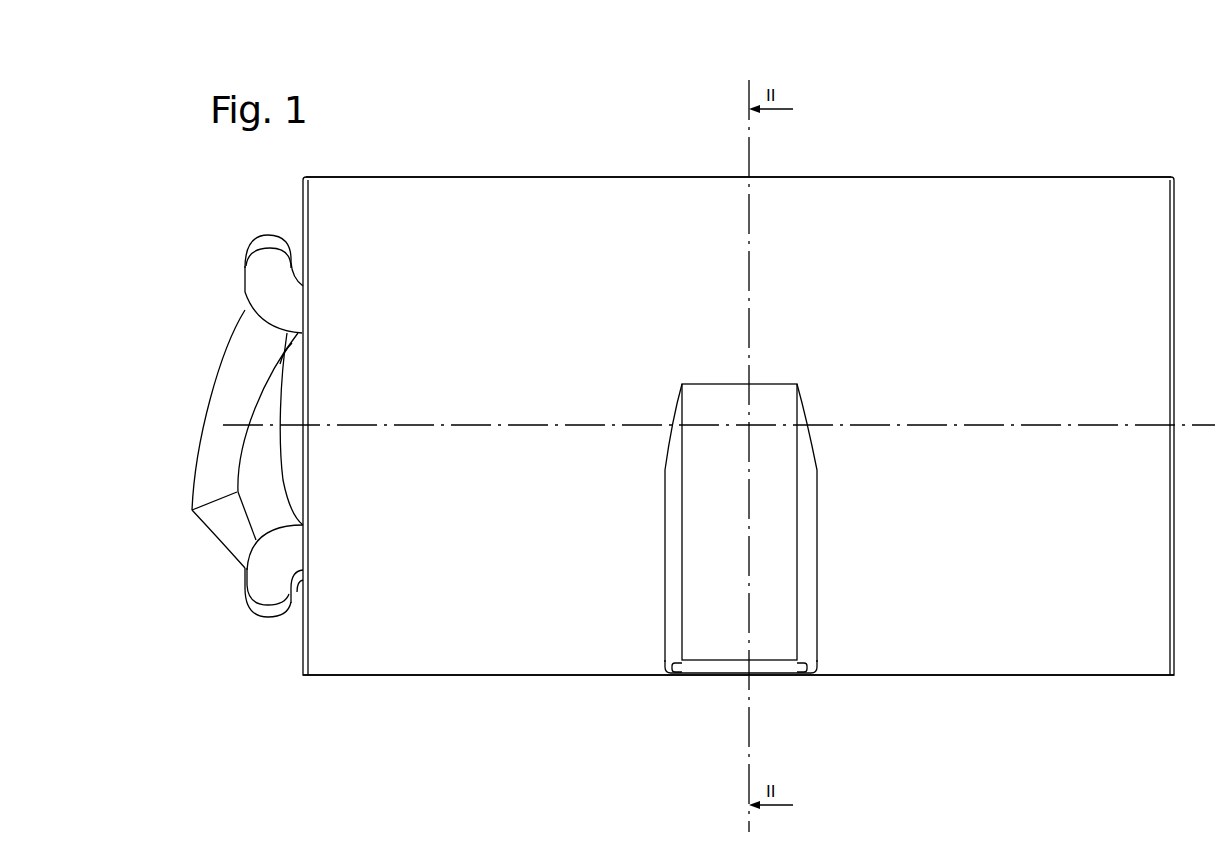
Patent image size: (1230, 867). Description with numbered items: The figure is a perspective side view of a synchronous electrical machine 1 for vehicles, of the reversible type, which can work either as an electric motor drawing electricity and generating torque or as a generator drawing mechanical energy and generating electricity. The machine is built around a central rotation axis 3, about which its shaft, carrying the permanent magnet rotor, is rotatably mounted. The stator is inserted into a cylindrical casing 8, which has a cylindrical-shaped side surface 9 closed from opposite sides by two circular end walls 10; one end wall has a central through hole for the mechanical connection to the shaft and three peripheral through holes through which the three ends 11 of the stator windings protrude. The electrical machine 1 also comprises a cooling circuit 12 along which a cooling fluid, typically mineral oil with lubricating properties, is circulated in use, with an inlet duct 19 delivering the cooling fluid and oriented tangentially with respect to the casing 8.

The synchronous electrical machine 1 is at (1188, 80).
The central rotation axis 3 is at (957, 423).
The cylindrical casing 8 is at (456, 133).
The cylindrical-shaped side surface 9 is at (560, 200).
The circular end walls 10 is at (294, 655).
The ends of the stator windings 11 is at (266, 260).
The cooling circuit 12 is at (609, 733).
The inlet duct 19 is at (771, 630).